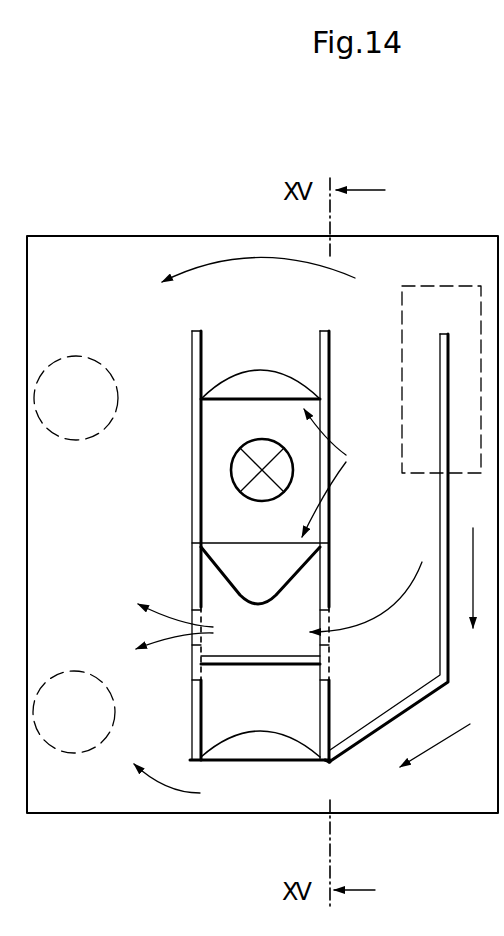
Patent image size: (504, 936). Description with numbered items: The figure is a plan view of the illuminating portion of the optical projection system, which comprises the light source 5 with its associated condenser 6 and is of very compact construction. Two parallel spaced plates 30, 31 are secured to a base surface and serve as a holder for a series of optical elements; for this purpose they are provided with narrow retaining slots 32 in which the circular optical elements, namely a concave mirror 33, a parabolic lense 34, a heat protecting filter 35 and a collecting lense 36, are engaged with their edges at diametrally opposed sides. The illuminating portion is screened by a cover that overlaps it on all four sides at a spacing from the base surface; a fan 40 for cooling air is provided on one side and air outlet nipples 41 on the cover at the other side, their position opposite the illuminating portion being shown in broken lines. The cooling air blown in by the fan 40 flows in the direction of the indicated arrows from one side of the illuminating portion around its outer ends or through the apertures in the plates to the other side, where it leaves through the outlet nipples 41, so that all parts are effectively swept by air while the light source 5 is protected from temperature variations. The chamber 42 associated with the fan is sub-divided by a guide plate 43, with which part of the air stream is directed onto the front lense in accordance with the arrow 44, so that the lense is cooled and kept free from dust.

The light source 5 is at (231, 473).
The condenser 6 is at (332, 473).
The plate 30 is at (193, 700).
The plate 31 is at (326, 722).
The retaining slots 32 is at (340, 667).
The concave mirror 33 is at (278, 380).
The parabolic lense 34 is at (228, 572).
The heat protecting filter 35 is at (267, 657).
The collecting lense 36 is at (256, 738).
The fan 40 is at (422, 473).
The air outlet nipples 41 is at (78, 441).
The chamber 42 is at (476, 803).
The guide plate 43 is at (441, 616).
The arrow 44 is at (447, 732).